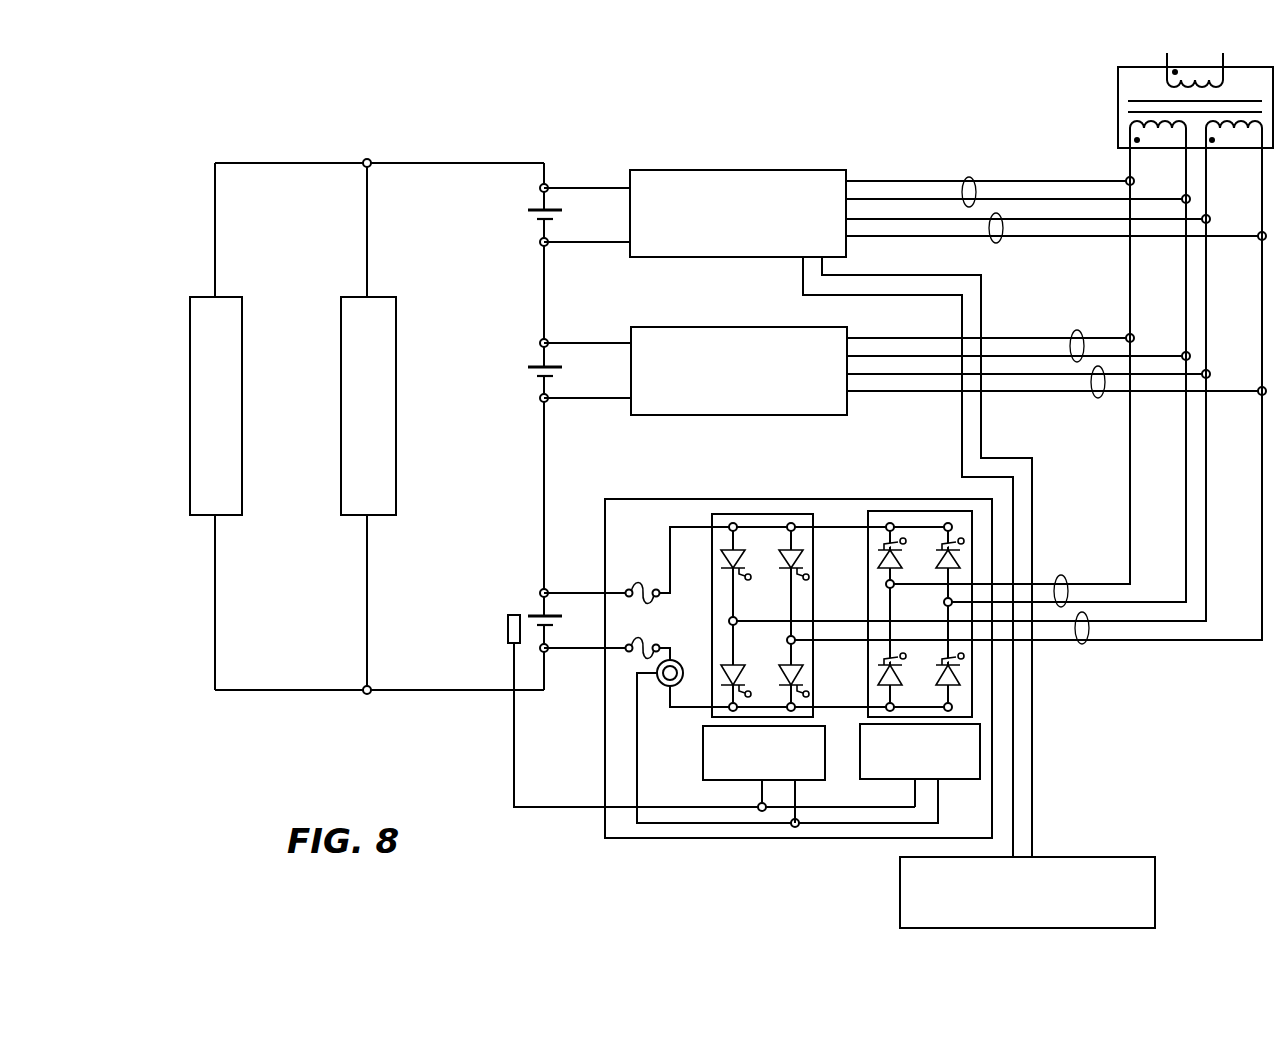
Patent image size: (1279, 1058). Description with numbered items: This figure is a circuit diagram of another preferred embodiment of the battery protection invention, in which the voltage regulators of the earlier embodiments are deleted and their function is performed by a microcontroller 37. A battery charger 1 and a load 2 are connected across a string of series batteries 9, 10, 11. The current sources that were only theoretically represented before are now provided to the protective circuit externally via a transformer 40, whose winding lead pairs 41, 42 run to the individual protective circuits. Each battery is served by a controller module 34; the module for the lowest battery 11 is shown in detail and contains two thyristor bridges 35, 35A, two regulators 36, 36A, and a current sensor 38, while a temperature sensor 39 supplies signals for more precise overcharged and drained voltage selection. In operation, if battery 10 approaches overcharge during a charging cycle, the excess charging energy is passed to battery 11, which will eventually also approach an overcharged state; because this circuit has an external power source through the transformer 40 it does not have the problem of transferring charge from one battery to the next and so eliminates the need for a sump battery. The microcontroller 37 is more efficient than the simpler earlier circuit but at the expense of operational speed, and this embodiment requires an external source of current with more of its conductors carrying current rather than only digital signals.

The battery charger 1 is at (190, 374).
The load 2 is at (341, 392).
The battery 9 is at (522, 232).
The battery 10 is at (520, 385).
The battery 11 is at (523, 600).
The microcontroller / equalizer module 34 is at (705, 170).
The thyristor bridge 35 is at (778, 514).
The thyristor bridge 35A is at (905, 511).
The regulator 36 is at (703, 750).
The regulator 36A is at (962, 780).
The microcontroller 37 is at (1160, 875).
The current sensor 38 is at (662, 686).
The temperature sensor 39 is at (508, 632).
The transformer 40 is at (1118, 85).
The winding lead pair 41 is at (967, 177).
The winding lead pair 42 is at (996, 243).